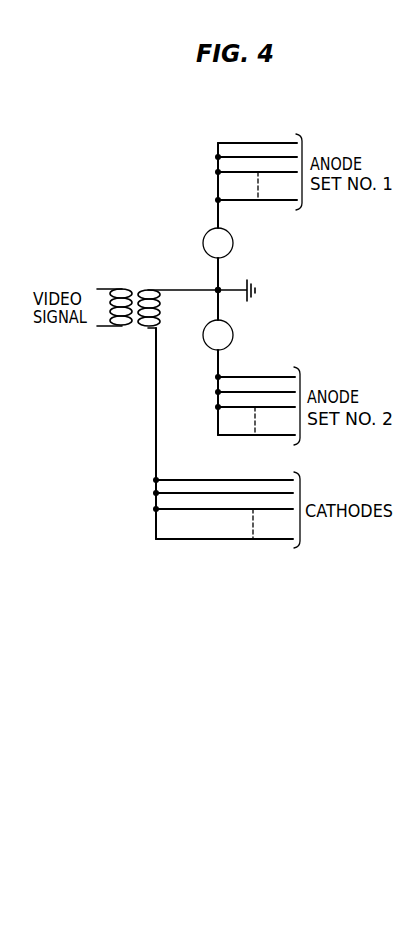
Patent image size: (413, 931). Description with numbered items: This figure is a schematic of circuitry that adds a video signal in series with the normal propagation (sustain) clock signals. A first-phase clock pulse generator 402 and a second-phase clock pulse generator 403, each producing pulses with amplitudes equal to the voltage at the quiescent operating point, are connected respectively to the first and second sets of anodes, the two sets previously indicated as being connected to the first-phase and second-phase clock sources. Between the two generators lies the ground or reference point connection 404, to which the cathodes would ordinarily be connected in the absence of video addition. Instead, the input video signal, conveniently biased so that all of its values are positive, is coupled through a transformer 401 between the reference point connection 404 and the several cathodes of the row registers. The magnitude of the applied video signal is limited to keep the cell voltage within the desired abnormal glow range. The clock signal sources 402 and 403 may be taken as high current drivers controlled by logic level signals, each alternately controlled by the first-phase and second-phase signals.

The transformer 401 is at (135, 333).
The Φ1H clock pulse generator 402 is at (235, 243).
The Φ2H clock pulse generator 403 is at (235, 335).
The ground or reference point connection 404 is at (215, 290).